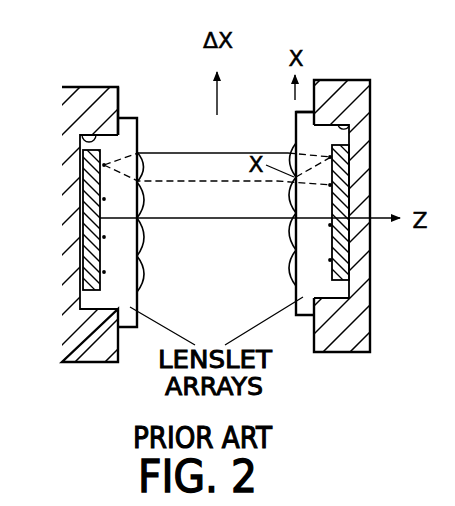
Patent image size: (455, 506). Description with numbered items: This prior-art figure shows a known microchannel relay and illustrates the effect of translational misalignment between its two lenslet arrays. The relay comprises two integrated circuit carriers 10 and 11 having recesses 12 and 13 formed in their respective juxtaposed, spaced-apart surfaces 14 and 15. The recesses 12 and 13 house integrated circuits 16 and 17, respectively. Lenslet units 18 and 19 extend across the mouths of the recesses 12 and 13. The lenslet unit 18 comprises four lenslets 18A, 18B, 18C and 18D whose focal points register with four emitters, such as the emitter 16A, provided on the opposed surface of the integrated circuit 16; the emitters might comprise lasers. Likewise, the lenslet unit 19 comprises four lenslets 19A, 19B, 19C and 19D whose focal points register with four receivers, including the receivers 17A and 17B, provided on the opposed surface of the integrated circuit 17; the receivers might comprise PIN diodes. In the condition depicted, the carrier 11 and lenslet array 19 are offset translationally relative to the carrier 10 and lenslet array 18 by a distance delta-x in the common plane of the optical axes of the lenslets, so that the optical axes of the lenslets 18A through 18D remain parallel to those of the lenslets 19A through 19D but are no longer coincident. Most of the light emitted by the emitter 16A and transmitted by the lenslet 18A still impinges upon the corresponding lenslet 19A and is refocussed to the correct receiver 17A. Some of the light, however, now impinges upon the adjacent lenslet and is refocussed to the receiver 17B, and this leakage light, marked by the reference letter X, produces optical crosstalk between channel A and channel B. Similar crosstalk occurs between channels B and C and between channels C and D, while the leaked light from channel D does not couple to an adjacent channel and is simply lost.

The integrated circuit carrier 10 is at (101, 87).
The integrated circuit carrier 11 is at (346, 80).
The recess 12 is at (88, 132).
The recess 13 is at (348, 128).
The surface 14 is at (120, 100).
The surface 15 is at (302, 112).
The integrated circuit 16 is at (88, 212).
The emitter 16A is at (101, 165).
The integrated circuit 17 is at (345, 262).
The receiver 17A is at (332, 157).
The receiver 17B is at (333, 185).
The lenslet unit 18 is at (140, 132).
The lenslet 18A is at (146, 160).
The lenslet 18B is at (147, 205).
The lenslet 18C is at (148, 238).
The lenslet 18D is at (148, 273).
The lenslet unit 19 is at (294, 126).
The lenslet 19A is at (288, 153).
The lenslet 19B is at (286, 194).
The lenslet 19C is at (286, 233).
The lenslet 19D is at (287, 268).